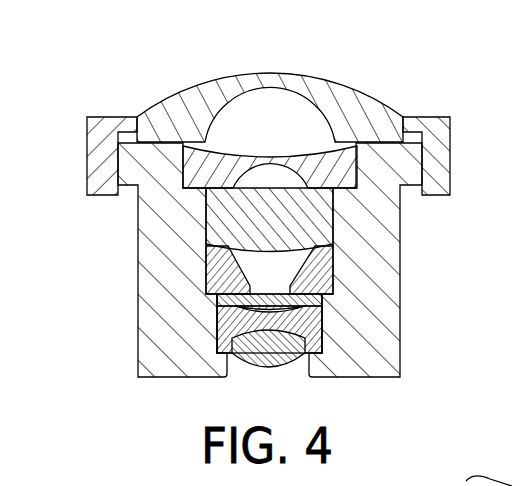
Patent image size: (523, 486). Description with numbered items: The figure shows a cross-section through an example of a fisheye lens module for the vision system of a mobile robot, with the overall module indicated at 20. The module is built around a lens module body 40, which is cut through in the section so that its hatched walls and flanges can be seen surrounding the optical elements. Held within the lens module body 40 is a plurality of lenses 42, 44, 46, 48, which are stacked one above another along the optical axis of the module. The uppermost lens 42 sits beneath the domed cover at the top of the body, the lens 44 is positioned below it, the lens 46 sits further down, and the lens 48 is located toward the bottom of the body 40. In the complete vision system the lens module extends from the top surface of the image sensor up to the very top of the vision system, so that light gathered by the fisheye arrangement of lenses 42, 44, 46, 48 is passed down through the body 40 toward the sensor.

The camera lens module 20 is at (99, 77).
The lens module body 40 is at (173, 315).
The lens 42 is at (192, 173).
The lens 44 is at (207, 228).
The lens 46 is at (333, 282).
The lens 48 is at (323, 348).